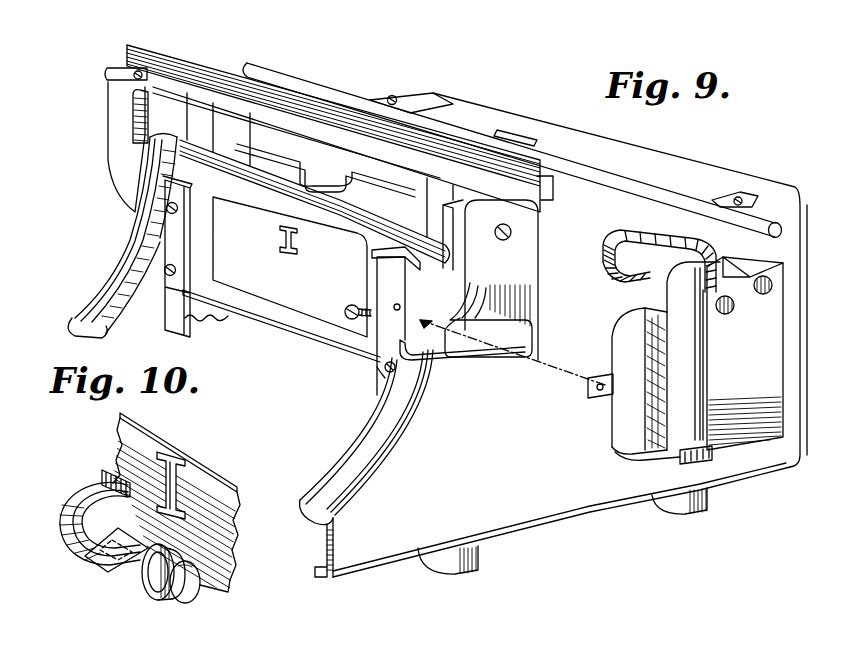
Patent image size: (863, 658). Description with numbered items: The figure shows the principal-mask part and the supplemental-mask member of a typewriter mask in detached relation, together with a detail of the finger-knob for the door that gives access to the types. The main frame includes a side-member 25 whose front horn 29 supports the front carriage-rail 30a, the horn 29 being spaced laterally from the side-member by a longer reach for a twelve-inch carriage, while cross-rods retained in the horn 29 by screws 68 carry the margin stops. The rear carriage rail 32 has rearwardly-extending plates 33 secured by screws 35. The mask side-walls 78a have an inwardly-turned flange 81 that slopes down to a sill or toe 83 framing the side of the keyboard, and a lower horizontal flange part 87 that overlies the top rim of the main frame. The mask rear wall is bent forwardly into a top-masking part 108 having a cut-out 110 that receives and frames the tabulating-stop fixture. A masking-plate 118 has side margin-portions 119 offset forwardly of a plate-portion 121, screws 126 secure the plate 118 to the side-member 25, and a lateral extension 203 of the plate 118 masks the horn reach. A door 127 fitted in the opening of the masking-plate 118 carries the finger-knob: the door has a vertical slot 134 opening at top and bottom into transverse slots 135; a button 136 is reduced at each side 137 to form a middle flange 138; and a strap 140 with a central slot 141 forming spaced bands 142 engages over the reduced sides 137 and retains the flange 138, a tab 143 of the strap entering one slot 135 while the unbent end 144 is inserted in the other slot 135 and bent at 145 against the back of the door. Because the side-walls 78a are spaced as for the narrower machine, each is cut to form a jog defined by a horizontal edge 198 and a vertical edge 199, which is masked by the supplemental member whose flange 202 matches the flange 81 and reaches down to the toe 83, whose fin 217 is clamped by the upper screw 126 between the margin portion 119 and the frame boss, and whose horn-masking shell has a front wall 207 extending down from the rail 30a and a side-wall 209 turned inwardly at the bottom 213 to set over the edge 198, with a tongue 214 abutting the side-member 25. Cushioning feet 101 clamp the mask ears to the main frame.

In FIG. 9, the front carriage-rail 30a is at (190, 82).
In FIG. 9, the rear carriage rail 32 is at (320, 95).
In FIG. 9, the screws 35 is at (392, 98).
In FIG. 9, the cut-out 110 is at (533, 138).
In FIG. 9, the top-masking part 108 is at (588, 259).
In FIG. 9, the rearwardly-extending plates 33 is at (747, 202).
In FIG. 9, the lower horizontal flange part 87 is at (660, 250).
In FIG. 9, the side-wall of horn-masking shell 209 is at (745, 353).
In FIG. 9, the front wall of horn-masking shell 207 is at (122, 150).
In FIG. 9, the flange 202 is at (147, 202).
In FIG. 9, the inwardly-turned flange 81 is at (112, 298).
In FIG. 9, the side margin-portions 119 is at (172, 240).
In FIG. 9, the lateral extension 203 is at (408, 230).
In FIG. 9, the door 127 is at (281, 285).
In FIG. 10, the door 127 is at (190, 524).
In FIG. 9, the vertical slot 134 is at (278, 239).
In FIG. 10, the vertical slot 134 is at (173, 497).
In FIG. 9, the screws 126 is at (347, 308).
In FIG. 9, the left side-member 25 is at (203, 313).
In FIG. 9, the masking-plate 118 is at (328, 347).
In FIG. 9, the plate-portion 121 is at (377, 367).
In FIG. 9, the front horn 29 is at (511, 280).
In FIG. 9, the screws 68 is at (511, 230).
In FIG. 9, the vertical edge 199 is at (531, 323).
In FIG. 9, the horizontal edge 198 is at (467, 360).
In FIG. 9, the fin 217 is at (607, 403).
In FIG. 9, the sill or toe 83 is at (335, 543).
In FIG. 9, the side-walls 78a is at (553, 490).
In FIG. 9, the cushioning feet 101 is at (473, 570).
In FIG. 9, the inwardly-turned bottom 213 is at (677, 450).
In FIG. 9, the tongue 214 is at (712, 452).
In FIG. 10, the transverse slots 135 is at (187, 473).
In FIG. 10, the strap 140 is at (82, 529).
In FIG. 10, the central slot 141 is at (83, 503).
In FIG. 10, the spaced bands 142 is at (80, 520).
In FIG. 10, the tab 143 is at (102, 477).
In FIG. 10, the unbent end 144 is at (140, 560).
In FIG. 10, the bent portion 145 is at (122, 570).
In FIG. 10, the button 136 is at (187, 592).
In FIG. 10, the reduced sides 137 is at (160, 590).
In FIG. 10, the middle flange 138 is at (187, 583).